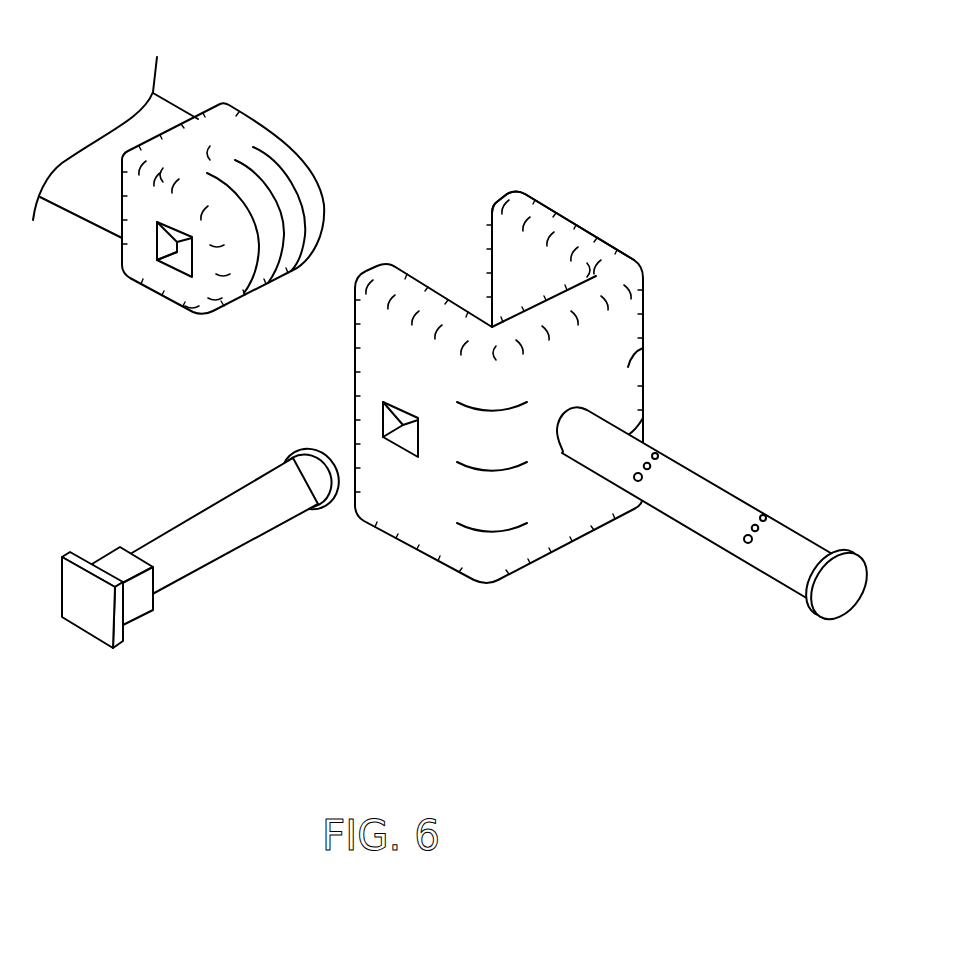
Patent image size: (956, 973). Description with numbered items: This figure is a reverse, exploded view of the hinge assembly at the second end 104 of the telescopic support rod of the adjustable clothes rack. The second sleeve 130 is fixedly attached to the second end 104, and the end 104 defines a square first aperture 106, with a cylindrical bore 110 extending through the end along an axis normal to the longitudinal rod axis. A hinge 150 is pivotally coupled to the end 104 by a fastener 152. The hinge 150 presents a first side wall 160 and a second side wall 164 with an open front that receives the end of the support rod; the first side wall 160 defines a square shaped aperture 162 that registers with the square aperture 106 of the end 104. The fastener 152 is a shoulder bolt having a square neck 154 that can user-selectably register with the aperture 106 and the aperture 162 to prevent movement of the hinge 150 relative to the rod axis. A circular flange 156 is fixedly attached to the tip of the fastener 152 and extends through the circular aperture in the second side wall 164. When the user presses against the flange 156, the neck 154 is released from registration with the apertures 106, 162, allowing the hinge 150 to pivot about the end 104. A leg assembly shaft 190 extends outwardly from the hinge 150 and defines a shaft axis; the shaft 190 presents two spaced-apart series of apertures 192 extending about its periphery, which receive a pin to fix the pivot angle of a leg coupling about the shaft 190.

The second end 104 is at (250, 120).
The first aperture 106 is at (172, 272).
The cylindrical bore 110 is at (157, 260).
The second sleeve 130 is at (163, 110).
The hinge 150 is at (677, 297).
The fastener 152 is at (171, 482).
The square neck 154 is at (103, 562).
The circular flange 156 is at (312, 452).
The first side wall 160 is at (418, 543).
The square shaped aperture 162 is at (393, 445).
The second side wall 164 is at (505, 238).
The leg assembly shaft 190 is at (797, 540).
The shaft apertures 192 is at (753, 510).